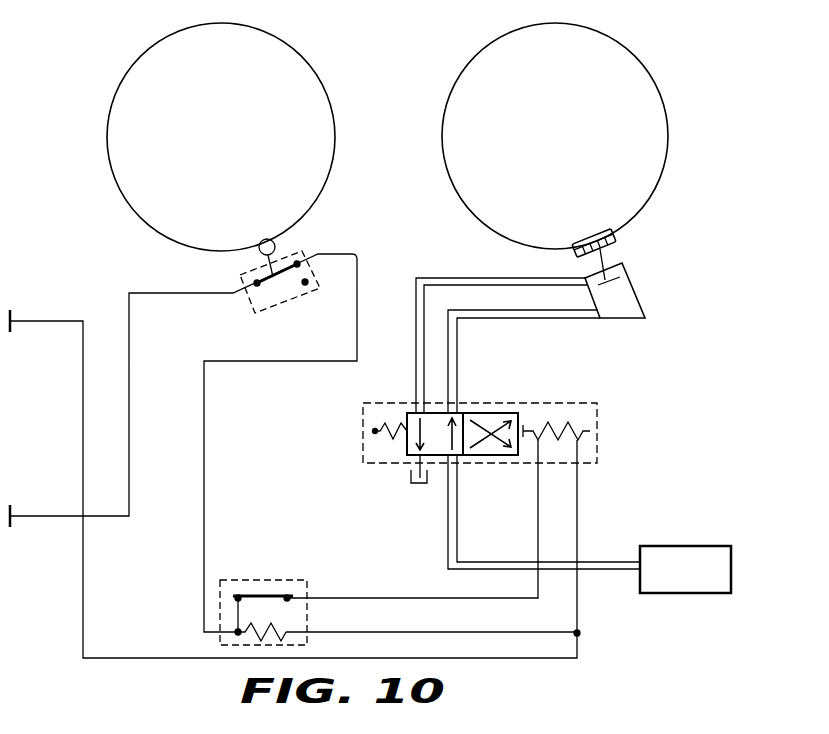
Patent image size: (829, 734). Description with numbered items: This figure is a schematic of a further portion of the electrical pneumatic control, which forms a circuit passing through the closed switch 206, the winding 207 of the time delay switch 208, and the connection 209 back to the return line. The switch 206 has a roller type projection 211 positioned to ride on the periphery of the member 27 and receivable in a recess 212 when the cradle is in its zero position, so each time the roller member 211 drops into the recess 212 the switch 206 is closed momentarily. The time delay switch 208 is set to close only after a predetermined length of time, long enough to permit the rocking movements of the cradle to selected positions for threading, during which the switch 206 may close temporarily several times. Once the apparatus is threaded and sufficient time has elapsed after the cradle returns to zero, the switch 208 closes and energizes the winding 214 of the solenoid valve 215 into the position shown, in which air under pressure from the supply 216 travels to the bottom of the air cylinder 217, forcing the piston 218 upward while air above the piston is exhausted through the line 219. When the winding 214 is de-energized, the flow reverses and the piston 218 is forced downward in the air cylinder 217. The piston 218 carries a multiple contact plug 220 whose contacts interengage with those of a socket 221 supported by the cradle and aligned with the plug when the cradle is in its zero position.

The member 27 is at (314, 84).
The recess 212 is at (267, 239).
The roller type projection 211 is at (259, 252).
The switch 206 is at (259, 284).
The socket 221 is at (596, 234).
The multiple contact plug 220 is at (616, 243).
The piston 218 is at (620, 279).
The air cylinder 217 is at (646, 312).
The solenoid valve 215 is at (542, 403).
The winding 214 is at (564, 436).
The line 219 is at (410, 474).
The supply 216 is at (685, 543).
The time delay switch 208 is at (263, 592).
The winding 207 is at (285, 628).
The connection 209 is at (580, 634).